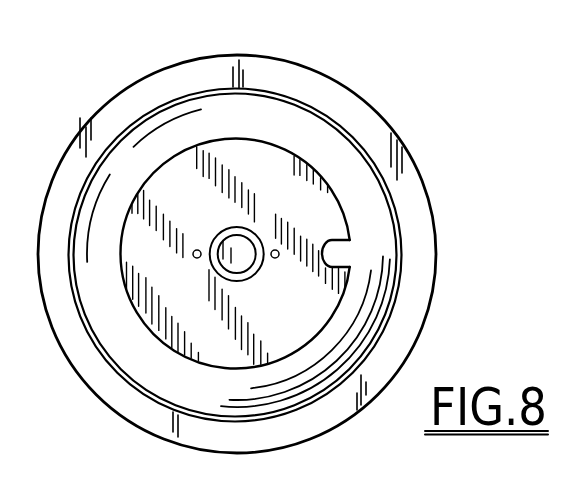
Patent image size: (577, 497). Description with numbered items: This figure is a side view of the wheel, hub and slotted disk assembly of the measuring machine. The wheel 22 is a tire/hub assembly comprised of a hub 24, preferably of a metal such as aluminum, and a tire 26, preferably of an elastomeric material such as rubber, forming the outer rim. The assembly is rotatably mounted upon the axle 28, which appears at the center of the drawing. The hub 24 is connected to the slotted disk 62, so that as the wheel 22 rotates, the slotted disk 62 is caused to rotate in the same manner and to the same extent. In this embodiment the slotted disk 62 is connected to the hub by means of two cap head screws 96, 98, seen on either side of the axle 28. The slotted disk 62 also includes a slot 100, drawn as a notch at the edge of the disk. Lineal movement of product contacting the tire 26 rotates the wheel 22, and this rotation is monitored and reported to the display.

The wheel 22 is at (410, 99).
The hub 24 is at (380, 224).
The tire 26 is at (417, 297).
The axle 28 is at (237, 239).
The slotted disk 62 is at (198, 212).
The cap head screw 96 is at (202, 258).
The cap head screw 98 is at (275, 259).
The slot 100 is at (340, 256).